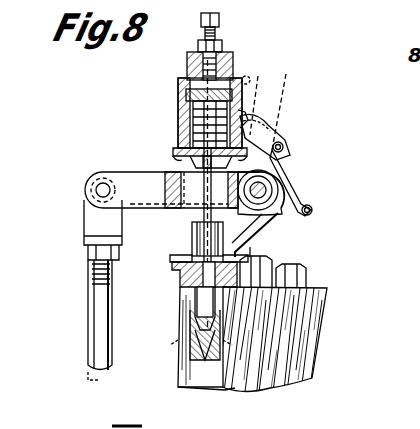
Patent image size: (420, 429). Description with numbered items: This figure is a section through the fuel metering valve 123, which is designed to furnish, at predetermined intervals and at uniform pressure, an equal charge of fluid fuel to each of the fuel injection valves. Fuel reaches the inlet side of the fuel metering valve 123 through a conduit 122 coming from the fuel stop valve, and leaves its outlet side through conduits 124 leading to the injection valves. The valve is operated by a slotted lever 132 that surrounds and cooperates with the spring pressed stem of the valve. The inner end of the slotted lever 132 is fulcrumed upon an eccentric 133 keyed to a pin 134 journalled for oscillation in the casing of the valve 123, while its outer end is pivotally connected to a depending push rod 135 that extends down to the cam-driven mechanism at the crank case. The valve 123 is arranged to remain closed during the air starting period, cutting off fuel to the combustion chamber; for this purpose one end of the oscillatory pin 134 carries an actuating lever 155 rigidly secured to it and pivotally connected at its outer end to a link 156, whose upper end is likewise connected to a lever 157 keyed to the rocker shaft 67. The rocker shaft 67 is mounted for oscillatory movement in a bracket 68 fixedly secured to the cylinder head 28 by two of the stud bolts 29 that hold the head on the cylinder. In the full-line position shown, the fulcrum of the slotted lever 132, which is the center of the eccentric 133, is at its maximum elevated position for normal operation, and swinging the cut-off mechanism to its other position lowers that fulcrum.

The fuel metering valve 123 is at (172, 136).
The slotted lever 132 is at (133, 180).
The push rod 135 is at (93, 312).
The bracket 68 is at (184, 208).
The eccentric 133 is at (270, 180).
The actuating lever 155 is at (305, 207).
The rocker shaft 67 is at (241, 127).
The lever 157 is at (253, 138).
The link 156 is at (258, 82).
The pin 134 is at (262, 207).
The conduit 122 is at (172, 326).
The cylinder head 28 is at (280, 346).
The stud bolts 29 is at (290, 267).
The conduits 124 is at (167, 350).